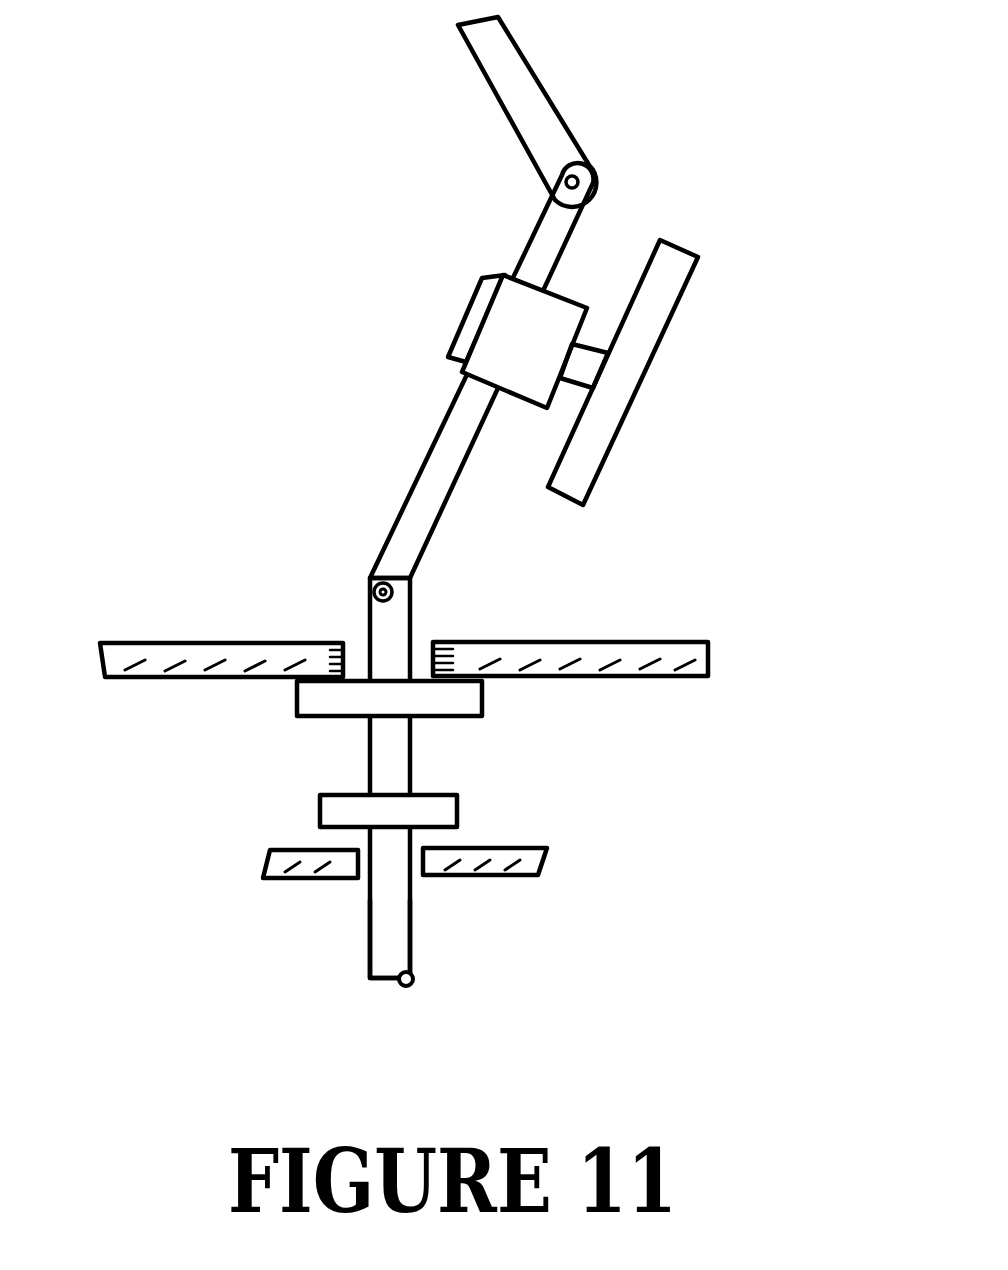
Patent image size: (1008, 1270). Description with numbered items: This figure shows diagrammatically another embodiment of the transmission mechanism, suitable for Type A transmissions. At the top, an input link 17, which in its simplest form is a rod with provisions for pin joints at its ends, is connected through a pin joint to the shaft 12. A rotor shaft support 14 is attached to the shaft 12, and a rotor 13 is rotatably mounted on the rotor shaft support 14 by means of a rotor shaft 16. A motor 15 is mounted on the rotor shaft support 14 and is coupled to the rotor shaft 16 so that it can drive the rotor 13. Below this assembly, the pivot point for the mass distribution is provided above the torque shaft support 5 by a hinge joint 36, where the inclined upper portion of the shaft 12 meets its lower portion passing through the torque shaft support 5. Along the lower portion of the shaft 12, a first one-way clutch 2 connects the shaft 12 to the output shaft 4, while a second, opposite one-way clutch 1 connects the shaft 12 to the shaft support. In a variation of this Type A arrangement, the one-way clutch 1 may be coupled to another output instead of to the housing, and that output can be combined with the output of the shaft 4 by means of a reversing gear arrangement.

The second one-way clutch 1 is at (297, 700).
The first one-way clutch 2 is at (320, 810).
The shaft 4 is at (413, 913).
The torque shaft support 5 is at (200, 644).
The shaft 12 is at (432, 508).
The rotor 13 is at (670, 287).
The rotor shaft support 14 is at (503, 277).
The motor 15 is at (453, 332).
The rotor shaft 16 is at (603, 340).
The input link 17 is at (530, 70).
The hinge joint 36 is at (378, 589).